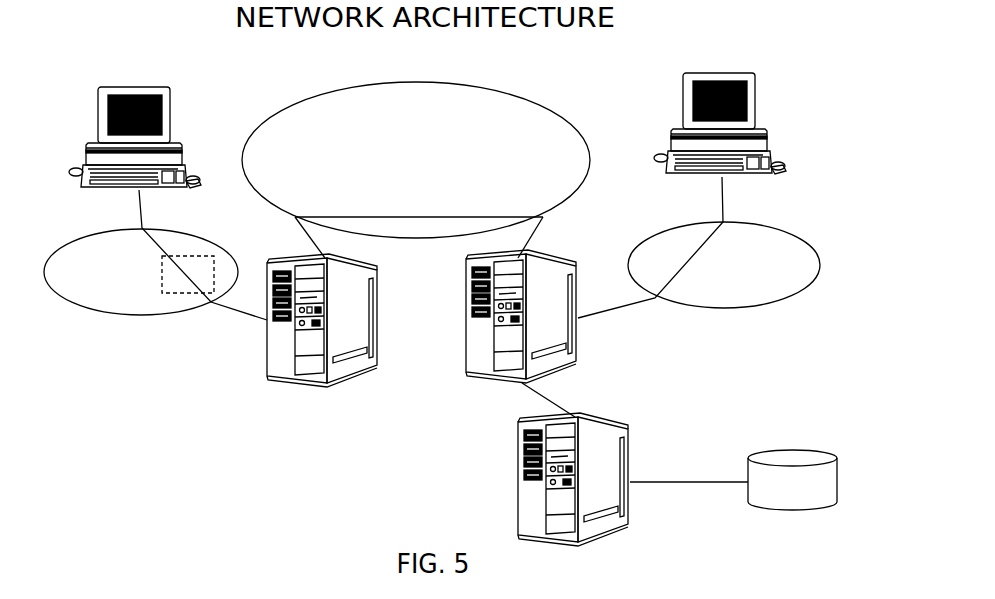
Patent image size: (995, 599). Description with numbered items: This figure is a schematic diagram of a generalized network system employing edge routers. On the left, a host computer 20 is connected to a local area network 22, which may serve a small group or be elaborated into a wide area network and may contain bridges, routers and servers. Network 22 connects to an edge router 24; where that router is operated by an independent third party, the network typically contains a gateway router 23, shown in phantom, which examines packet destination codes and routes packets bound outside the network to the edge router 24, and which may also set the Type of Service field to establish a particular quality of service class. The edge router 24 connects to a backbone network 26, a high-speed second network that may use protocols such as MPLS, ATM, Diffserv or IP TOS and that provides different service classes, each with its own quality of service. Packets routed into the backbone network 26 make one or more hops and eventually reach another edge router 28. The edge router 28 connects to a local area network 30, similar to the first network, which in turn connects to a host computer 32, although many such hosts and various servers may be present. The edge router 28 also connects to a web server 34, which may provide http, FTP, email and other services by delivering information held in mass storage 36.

The host computer 20 is at (94, 121).
The local area network 22 is at (82, 313).
The gateway router 23 is at (170, 296).
The edge router 24 is at (289, 389).
The backbone network 26 is at (537, 92).
The edge router 28 is at (468, 389).
The local area network 30 is at (777, 315).
The host computer 32 is at (760, 101).
The web server 34 is at (606, 548).
The mass storage 36 is at (799, 517).